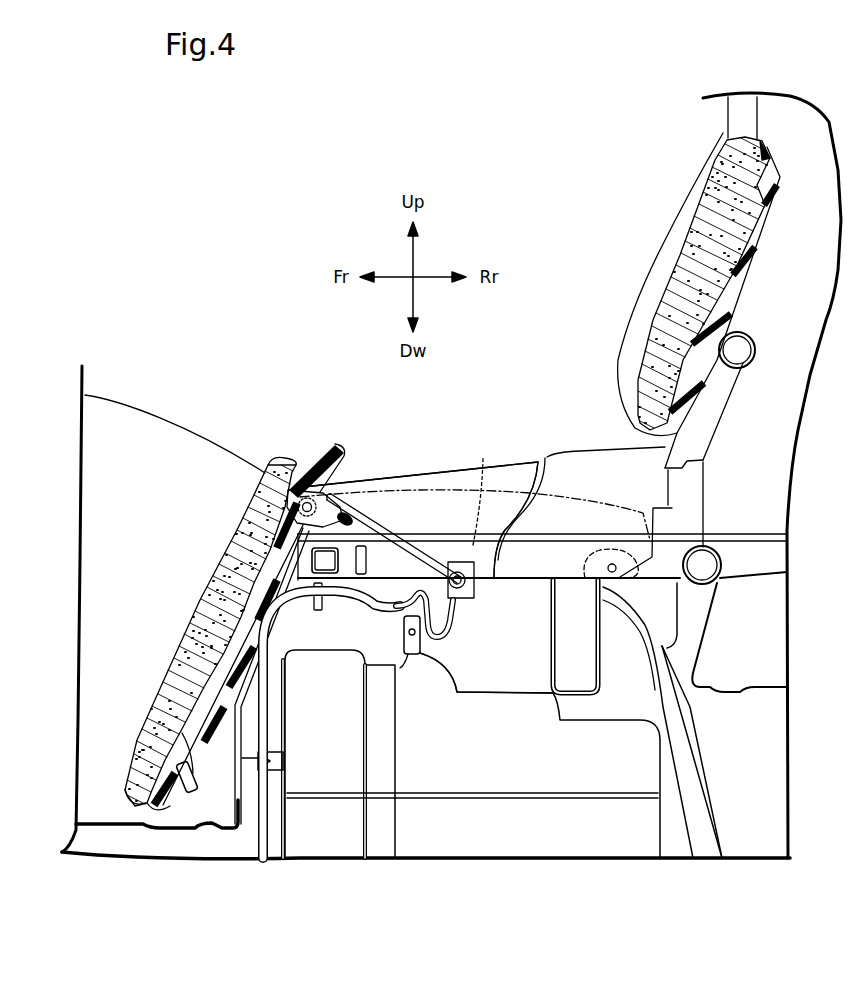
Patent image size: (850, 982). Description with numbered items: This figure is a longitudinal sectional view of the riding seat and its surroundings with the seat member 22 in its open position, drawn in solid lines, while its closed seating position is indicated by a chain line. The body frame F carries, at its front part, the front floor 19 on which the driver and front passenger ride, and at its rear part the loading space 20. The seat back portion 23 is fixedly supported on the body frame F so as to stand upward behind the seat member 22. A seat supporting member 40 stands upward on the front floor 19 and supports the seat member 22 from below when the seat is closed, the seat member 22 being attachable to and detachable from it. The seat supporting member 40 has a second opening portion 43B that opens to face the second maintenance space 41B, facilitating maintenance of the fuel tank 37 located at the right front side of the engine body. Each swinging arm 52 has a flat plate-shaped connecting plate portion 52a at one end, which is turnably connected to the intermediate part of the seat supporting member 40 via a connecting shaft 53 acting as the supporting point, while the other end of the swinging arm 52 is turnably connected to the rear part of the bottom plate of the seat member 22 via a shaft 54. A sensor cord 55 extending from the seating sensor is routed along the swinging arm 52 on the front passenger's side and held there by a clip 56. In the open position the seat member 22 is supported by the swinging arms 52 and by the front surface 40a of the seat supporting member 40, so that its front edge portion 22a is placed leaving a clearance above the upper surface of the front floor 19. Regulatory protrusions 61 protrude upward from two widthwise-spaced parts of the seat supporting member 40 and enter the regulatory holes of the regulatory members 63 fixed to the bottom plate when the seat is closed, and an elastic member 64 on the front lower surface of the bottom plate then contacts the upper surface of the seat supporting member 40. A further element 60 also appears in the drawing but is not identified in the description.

The front floor 19 is at (120, 823).
The loading space 20 is at (773, 680).
The seat member 22 is at (193, 632).
The front edge portion 22a is at (127, 797).
The seat back portion 23 is at (657, 315).
The fuel tank 37 is at (617, 737).
The seat supporting member 40 is at (453, 540).
The front surface 40a is at (219, 677).
The second maintenance space 41B is at (467, 671).
The second opening portion 43B is at (497, 565).
The swinging arm 52 is at (361, 574).
The connecting plate portion 52a is at (458, 600).
The connecting shaft 53 is at (473, 545).
The shaft 54 is at (293, 462).
The sensor cord 55 is at (346, 510).
The clip 56 is at (360, 517).
The cover plate 60 is at (327, 450).
The regulatory protrusion 61 is at (397, 557).
The regulatory member 63 is at (233, 783).
The elastic member 64 is at (193, 790).
The body frame F is at (706, 778).